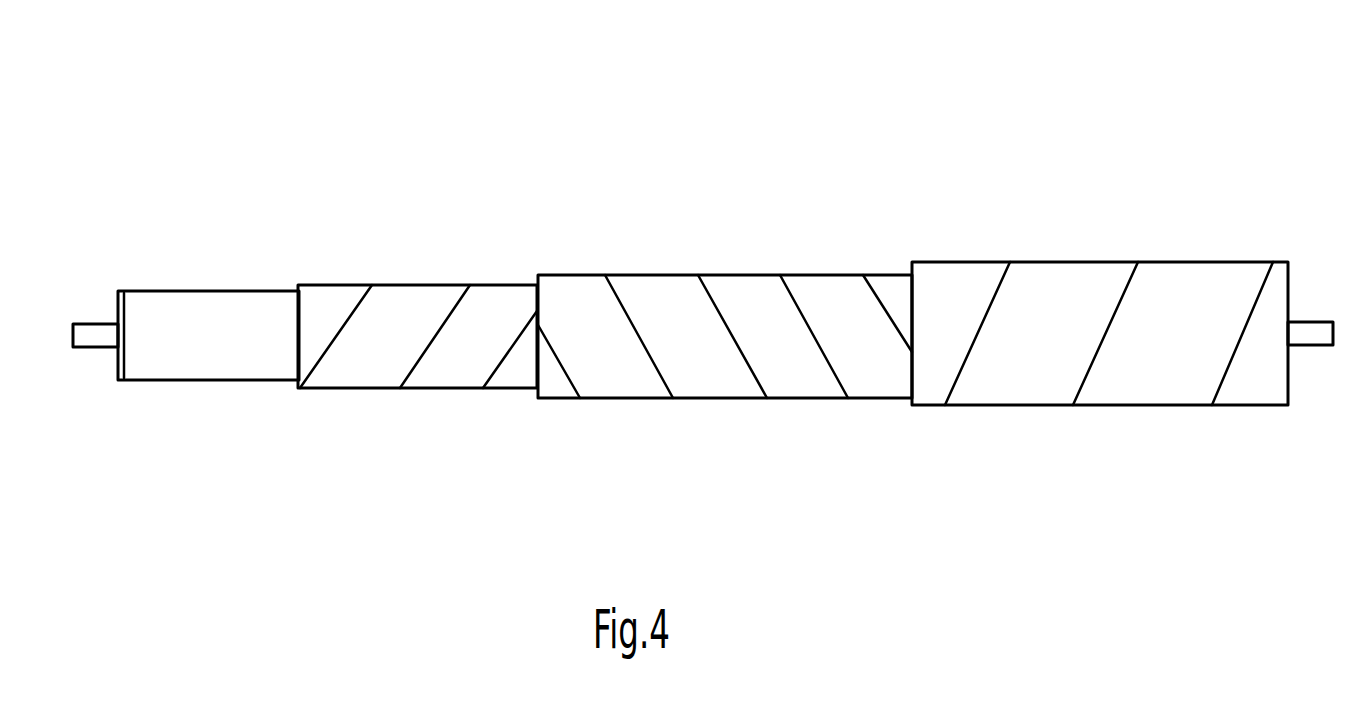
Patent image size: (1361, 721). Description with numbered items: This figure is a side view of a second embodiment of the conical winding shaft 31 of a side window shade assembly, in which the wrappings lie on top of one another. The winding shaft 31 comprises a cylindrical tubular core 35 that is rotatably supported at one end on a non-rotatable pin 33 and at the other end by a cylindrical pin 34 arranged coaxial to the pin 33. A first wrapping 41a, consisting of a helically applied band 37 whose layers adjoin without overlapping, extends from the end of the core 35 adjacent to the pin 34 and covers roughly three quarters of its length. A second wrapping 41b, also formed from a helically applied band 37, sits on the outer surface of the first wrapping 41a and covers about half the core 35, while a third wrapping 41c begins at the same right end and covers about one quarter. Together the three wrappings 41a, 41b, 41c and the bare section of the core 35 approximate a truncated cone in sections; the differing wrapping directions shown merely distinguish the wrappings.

The winding shaft 31 is at (692, 170).
The pin 33 is at (92, 339).
The cylindrical pin 34 is at (1310, 333).
The cylindrical tubular core 35 is at (188, 357).
The band 37 is at (427, 300).
The first wrapping 41a is at (436, 397).
The second wrapping 41b is at (730, 405).
The third wrapping 41c is at (1031, 413).